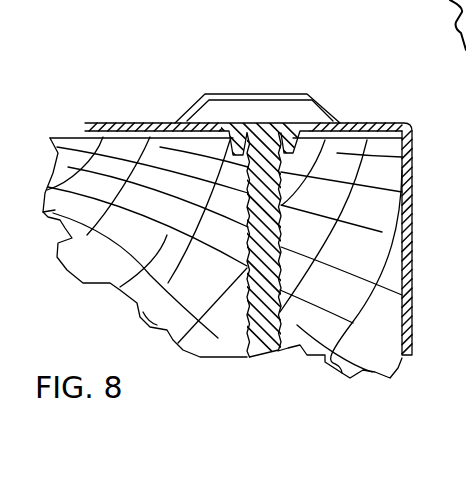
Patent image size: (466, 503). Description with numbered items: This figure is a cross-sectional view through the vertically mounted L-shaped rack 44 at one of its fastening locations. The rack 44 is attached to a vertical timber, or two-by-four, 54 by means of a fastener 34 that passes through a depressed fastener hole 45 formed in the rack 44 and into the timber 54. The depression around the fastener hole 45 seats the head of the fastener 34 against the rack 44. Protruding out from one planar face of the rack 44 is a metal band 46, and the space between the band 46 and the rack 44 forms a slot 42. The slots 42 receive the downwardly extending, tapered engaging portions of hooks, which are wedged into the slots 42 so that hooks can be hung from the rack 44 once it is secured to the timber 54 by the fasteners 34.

The fastener 34 is at (273, 123).
The slot 42 is at (320, 107).
The rack 44 is at (412, 255).
The fastener hole 45 is at (253, 123).
The metal band 46 is at (222, 93).
The vertical timber 54 is at (65, 137).